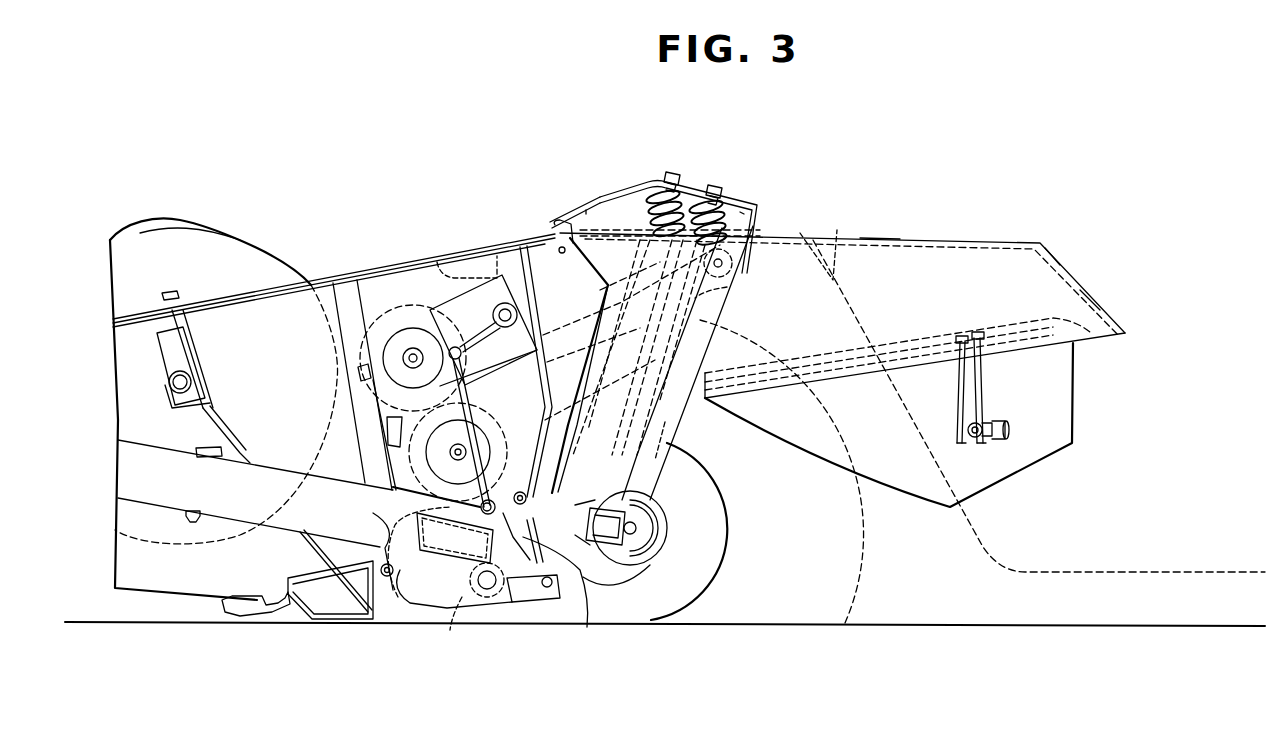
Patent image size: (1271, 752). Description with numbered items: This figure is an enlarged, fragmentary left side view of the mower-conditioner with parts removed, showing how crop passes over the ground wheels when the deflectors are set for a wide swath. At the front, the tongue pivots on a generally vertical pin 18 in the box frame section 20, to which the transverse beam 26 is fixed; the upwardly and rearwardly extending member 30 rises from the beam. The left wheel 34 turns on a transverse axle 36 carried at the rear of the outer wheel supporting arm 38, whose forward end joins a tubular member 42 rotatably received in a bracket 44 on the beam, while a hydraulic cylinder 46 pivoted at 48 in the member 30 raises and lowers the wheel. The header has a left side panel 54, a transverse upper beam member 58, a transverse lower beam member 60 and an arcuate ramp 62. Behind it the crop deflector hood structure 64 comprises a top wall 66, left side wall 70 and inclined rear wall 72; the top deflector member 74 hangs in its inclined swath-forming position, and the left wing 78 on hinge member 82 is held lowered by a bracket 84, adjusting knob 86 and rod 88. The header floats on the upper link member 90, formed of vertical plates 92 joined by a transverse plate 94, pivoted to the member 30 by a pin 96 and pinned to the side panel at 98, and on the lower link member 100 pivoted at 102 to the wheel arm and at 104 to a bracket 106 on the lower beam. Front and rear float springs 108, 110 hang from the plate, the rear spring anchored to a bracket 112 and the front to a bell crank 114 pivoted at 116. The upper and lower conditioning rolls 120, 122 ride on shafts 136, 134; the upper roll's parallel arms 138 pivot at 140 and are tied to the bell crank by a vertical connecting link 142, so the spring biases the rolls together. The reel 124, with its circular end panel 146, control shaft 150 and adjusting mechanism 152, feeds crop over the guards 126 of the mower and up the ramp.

The vertical pin 18 is at (217, 450).
The box frame section 20 is at (157, 493).
The transverse beam 26 is at (398, 597).
The upwardly and rearwardly extending member 30 is at (673, 419).
The left wheel 34 is at (703, 483).
The transverse axle 36 is at (636, 526).
The outer wheel supporting arm 38 is at (587, 627).
The tubular member 42 is at (448, 621).
The bracket 44 is at (473, 567).
The hydraulic cylinder 46 is at (665, 422).
The pivotal connection 48 is at (727, 287).
The left side panel 54 is at (367, 280).
The transverse upper beam member 58 is at (437, 262).
The transverse lower beam member 60 is at (313, 613).
The transverse arcuate ramp 62 is at (322, 548).
The crop deflector hood structure 64 is at (942, 227).
The top wall 66 is at (877, 234).
The left side wall 70 is at (1057, 275).
The rear wall 72 is at (1097, 299).
The top deflector member 74 is at (814, 247).
The left side deflector wing 78 is at (1000, 470).
The hinge member 82 is at (1092, 337).
The bracket 84 is at (960, 392).
The threaded adjusting knob 86 is at (1011, 428).
The rod 88 is at (985, 389).
The upper link member 90 is at (630, 176).
The vertical plate 92 is at (588, 215).
The transverse plate 94 is at (740, 210).
The pin 96 is at (722, 268).
The pin connection 98 is at (558, 222).
The lower link member 100 is at (480, 592).
The pivotal connection 102 is at (540, 600).
The pivotal connection 104 is at (385, 578).
The bracket 106 is at (373, 513).
The front float spring 108 is at (660, 180).
The rear float spring 110 is at (707, 190).
The bracket 112 is at (626, 590).
The bell crank 114 is at (512, 594).
The pivot 116 is at (525, 467).
The upper crop conditioning roll 120 is at (384, 308).
The lower crop conditioning roll 122 is at (410, 455).
The reel 124 is at (260, 212).
The guard 126 is at (240, 608).
The shaft 134 is at (450, 453).
The shaft 136 is at (413, 348).
The parallel arm 138 is at (472, 302).
The pivot 140 is at (505, 303).
The vertical connecting link 142 is at (493, 404).
The circular end panel 146 is at (267, 262).
The control shaft 150 is at (190, 380).
The adjusting mechanism 152 is at (160, 394).